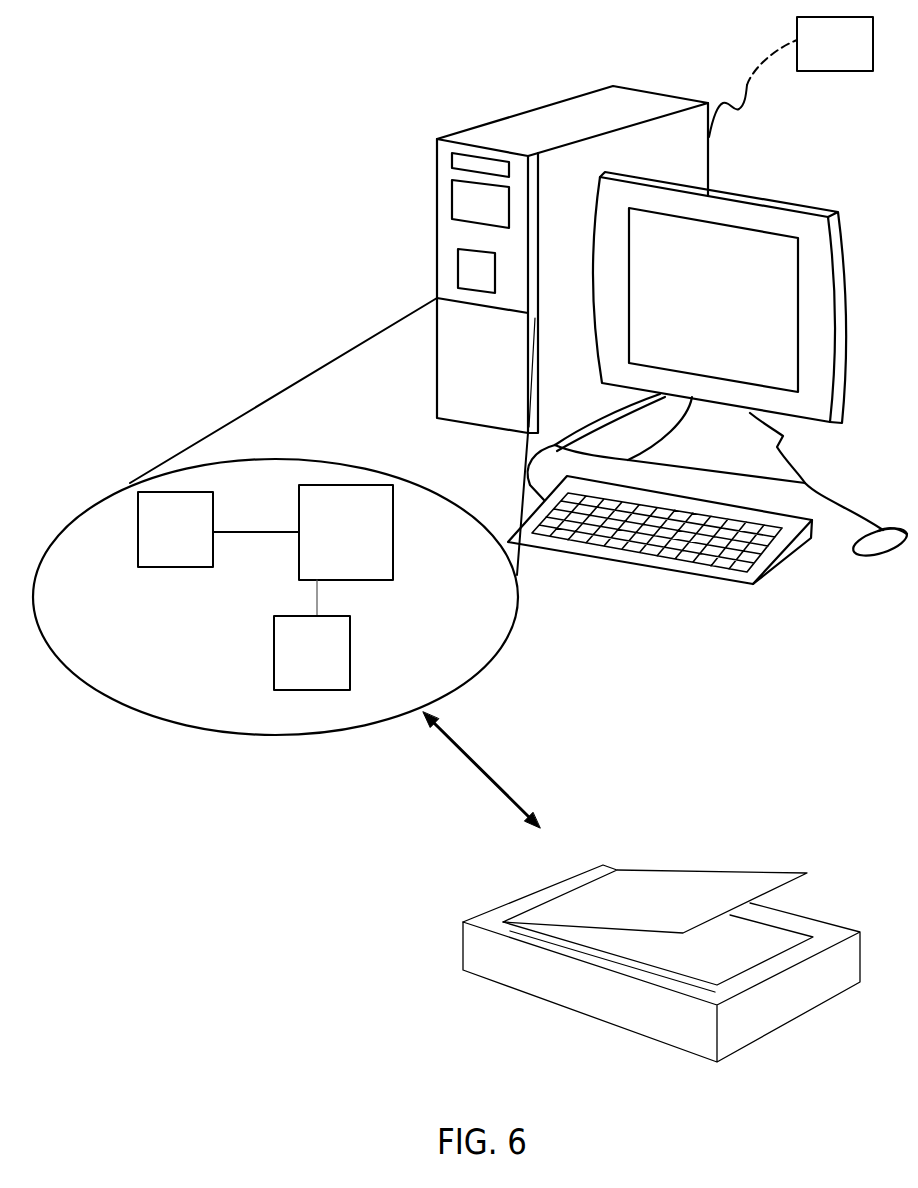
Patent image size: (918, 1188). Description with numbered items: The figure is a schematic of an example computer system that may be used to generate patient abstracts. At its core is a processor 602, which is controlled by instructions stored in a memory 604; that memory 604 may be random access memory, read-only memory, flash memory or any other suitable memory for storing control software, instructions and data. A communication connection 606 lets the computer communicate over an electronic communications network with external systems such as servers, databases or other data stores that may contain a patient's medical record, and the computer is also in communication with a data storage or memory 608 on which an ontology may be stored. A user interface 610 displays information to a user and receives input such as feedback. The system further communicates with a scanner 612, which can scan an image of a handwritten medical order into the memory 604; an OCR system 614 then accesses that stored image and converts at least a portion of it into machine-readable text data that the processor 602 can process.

The processor 602 is at (370, 68).
The memory 604 is at (197, 567).
The communication connection 606 is at (744, 111).
The data storage or memory 608 is at (837, 71).
The user interface 610 is at (674, 640).
The scanner 612 is at (778, 1018).
The OCR system 614 is at (332, 690).